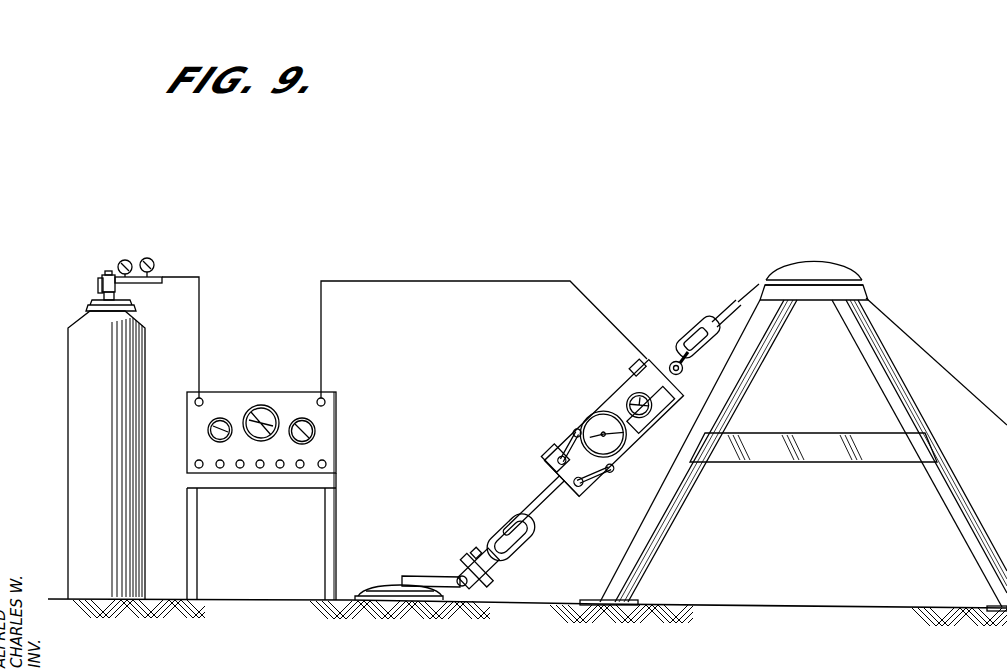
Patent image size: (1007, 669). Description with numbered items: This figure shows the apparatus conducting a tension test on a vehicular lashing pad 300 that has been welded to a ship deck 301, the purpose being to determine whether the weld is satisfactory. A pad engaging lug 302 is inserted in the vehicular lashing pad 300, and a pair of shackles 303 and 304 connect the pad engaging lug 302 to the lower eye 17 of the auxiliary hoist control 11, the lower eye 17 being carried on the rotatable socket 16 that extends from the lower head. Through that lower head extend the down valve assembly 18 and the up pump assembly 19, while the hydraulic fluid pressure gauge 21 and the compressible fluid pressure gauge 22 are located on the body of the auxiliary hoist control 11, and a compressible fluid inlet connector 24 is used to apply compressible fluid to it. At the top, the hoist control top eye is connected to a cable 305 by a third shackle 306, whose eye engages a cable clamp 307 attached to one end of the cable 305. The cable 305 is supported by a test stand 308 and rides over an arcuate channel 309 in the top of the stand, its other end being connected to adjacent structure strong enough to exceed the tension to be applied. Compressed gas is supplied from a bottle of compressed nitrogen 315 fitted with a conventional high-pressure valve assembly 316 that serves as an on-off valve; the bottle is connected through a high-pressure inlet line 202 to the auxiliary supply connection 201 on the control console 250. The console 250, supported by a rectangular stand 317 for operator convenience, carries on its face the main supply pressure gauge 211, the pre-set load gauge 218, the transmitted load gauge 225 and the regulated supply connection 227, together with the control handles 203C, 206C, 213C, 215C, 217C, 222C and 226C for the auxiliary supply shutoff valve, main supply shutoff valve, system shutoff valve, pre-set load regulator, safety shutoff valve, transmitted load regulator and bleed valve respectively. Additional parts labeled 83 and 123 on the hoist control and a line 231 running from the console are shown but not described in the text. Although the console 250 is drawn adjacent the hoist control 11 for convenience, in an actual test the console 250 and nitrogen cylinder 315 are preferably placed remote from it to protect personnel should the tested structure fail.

The auxiliary hoist control 11 is at (542, 471).
The rotatable socket 16 is at (533, 505).
The lower eye 17 is at (511, 537).
The down valve assembly 18 is at (561, 478).
The up pump assembly 19 is at (555, 458).
The hydraulic fluid pressure gauge 21 is at (603, 434).
The compressible fluid pressure gauge 22 is at (638, 404).
The compressible fluid inlet connector 24 is at (637, 367).
The link 83 is at (569, 446).
The link 123 is at (593, 475).
The auxiliary supply connection 201 is at (197, 398).
The high-pressure inlet line 202 is at (201, 322).
The auxiliary supply shutoff valve control handle 203C is at (195, 465).
The main supply shutoff valve control handle 206C is at (217, 466).
The main supply pressure gauge 211 is at (208, 431).
The system shutoff valve control handle 213C is at (240, 469).
The pre-set load regulator control handle 215C is at (300, 469).
The safety shutoff valve control handle 217C is at (280, 469).
The pre-set load gauge 218 is at (315, 432).
The transmitted load regulator control handle 222C is at (260, 469).
The transmitted load gauge 225 is at (262, 404).
The bleed valve control handle 226C is at (326, 464).
The regulated supply connection 227 is at (325, 401).
The conduit 231 is at (425, 281).
The control console 250 is at (269, 470).
The vehicular lashing pad 300 is at (380, 587).
The ship deck 301 is at (505, 603).
The pad engaging lug 302 is at (420, 576).
The shackle 303 is at (457, 577).
The shackle 304 is at (478, 568).
The cable 305 is at (740, 298).
The third shackle 306 is at (676, 361).
The cable clamp 307 is at (704, 325).
The test stand 308 is at (790, 464).
The arcuate channel 309 is at (830, 262).
The bottle of compressed nitrogen 315 is at (67, 377).
The high-pressure valve assembly 316 is at (106, 270).
The rectangular stand 317 is at (337, 492).